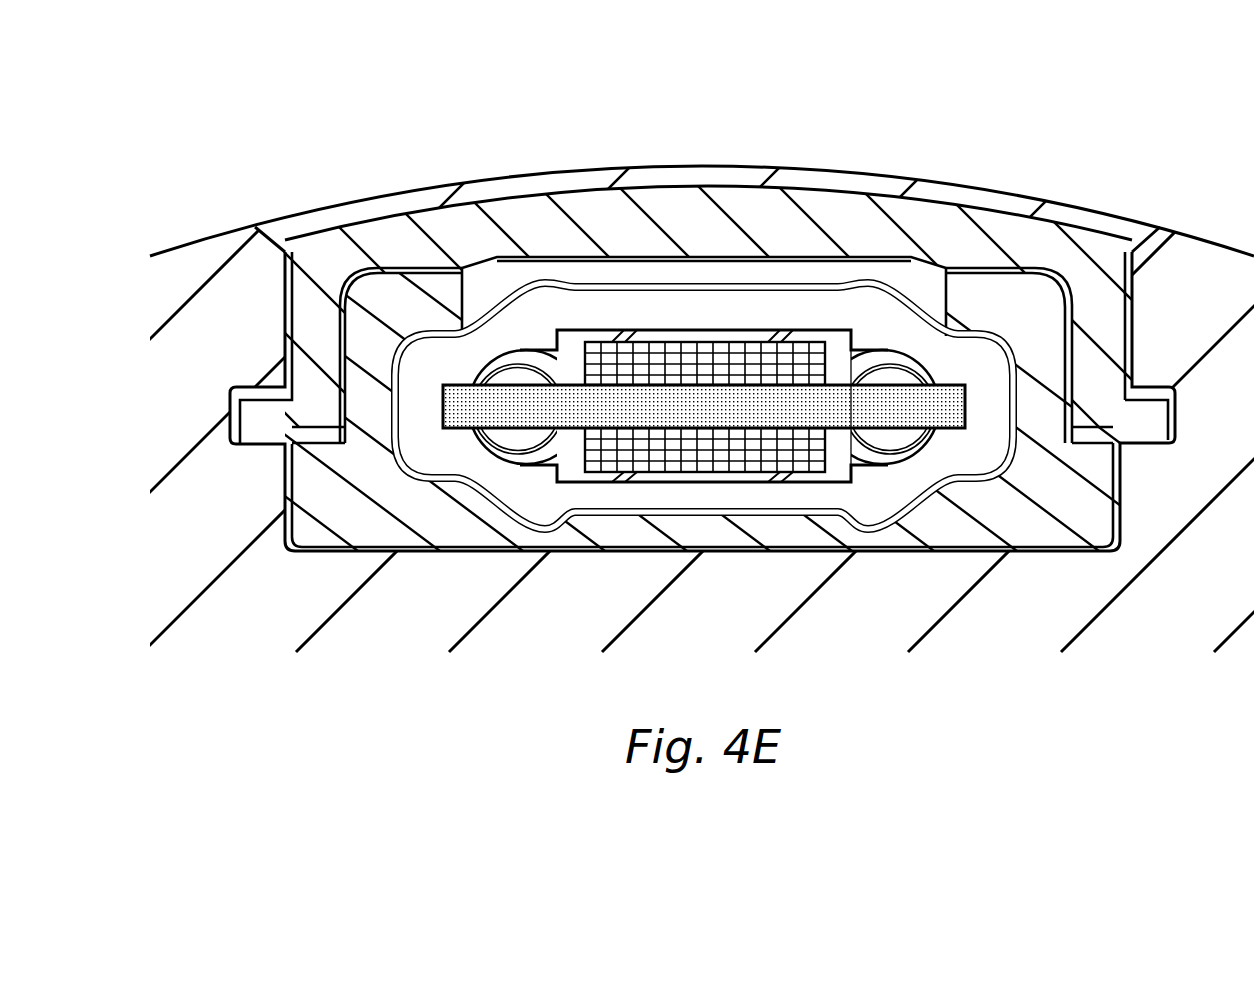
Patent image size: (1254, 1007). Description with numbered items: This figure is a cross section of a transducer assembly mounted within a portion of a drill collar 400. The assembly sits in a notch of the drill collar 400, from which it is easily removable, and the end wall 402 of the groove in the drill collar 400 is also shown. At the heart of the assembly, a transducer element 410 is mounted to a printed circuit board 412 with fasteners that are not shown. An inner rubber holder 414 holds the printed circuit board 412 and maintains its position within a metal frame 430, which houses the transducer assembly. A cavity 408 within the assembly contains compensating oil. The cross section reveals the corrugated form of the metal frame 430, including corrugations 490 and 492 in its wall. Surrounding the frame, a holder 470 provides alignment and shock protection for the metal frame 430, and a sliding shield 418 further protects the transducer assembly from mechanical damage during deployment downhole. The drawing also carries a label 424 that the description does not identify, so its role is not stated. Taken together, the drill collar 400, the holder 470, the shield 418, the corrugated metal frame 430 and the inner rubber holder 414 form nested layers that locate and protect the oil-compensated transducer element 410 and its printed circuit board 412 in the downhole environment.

The drill collar 400 is at (1156, 312).
The end wall 402 is at (958, 197).
The cavity 408 is at (547, 356).
The transducer element 410 is at (725, 462).
The printed circuit board 412 is at (558, 420).
The inner rubber holder 414 is at (864, 497).
The sliding shield 418 is at (373, 240).
The gap 424 is at (690, 268).
The metal frame 430 is at (433, 480).
The holder 470 is at (983, 520).
The corrugation 490 is at (540, 280).
The corrugation 492 is at (878, 280).